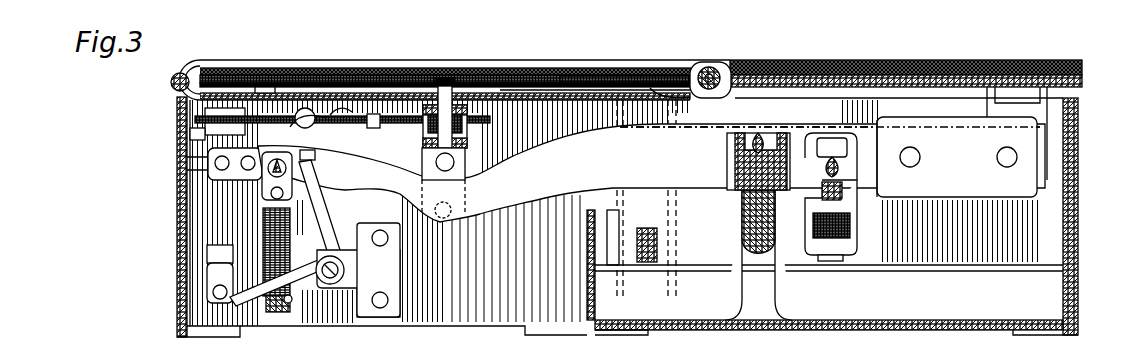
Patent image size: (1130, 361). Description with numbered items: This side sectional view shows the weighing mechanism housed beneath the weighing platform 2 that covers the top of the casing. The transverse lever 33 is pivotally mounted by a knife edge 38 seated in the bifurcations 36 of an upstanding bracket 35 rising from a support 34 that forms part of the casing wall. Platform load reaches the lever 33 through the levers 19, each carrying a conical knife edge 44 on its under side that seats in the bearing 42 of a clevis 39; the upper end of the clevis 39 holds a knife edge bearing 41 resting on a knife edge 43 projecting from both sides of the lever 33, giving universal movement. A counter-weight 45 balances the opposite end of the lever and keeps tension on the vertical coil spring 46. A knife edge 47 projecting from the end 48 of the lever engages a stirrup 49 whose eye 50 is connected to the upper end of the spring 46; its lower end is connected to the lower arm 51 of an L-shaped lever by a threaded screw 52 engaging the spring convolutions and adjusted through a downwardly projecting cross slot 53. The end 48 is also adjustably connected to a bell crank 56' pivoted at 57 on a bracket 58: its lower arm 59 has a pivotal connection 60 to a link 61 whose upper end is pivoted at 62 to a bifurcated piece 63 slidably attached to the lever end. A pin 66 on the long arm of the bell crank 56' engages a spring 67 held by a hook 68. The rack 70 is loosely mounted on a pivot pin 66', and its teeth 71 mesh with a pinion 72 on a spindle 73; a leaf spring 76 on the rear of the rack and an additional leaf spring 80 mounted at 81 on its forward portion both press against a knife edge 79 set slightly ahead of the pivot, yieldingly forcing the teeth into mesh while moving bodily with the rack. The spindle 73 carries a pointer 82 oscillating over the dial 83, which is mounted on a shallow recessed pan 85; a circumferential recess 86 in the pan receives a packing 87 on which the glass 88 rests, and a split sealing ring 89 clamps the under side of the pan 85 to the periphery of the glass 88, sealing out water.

The weighing platform 2 is at (985, 62).
The split circumferential sealing ring 89 is at (185, 66).
The leaf spring 76 is at (220, 117).
The bifurcated piece 63 is at (233, 83).
The pointer 82 is at (410, 83).
The spring 67 is at (264, 92).
The scale dial 83 is at (530, 93).
The shallow recessed scale pan 85 is at (608, 88).
The glass 88 is at (660, 88).
The packing 87 is at (722, 68).
The circumferential recess 86 is at (708, 66).
The mounting of additional leaf spring 81 is at (382, 120).
The pin 66 is at (330, 82).
The additional leaf spring 80 is at (325, 125).
The rack 70 is at (342, 104).
The hook 68 is at (200, 142).
The pivotal connection 62 is at (207, 162).
The knife edge 47 is at (213, 170).
The transverse lever 33 is at (530, 192).
The teeth 71 is at (468, 133).
The pinion 72 is at (468, 118).
The spindle 73 is at (449, 80).
The end of transverse lever 48 is at (345, 152).
The eye 50 is at (318, 182).
The knife edge 79 is at (277, 158).
The pivot pin 66' is at (313, 99).
The bell crank 56' is at (351, 208).
The stirrup 49 is at (272, 193).
The coil spring 46 is at (265, 240).
The cross slot 53 is at (272, 312).
The threaded screw 52 is at (292, 298).
The link 61 is at (220, 250).
The pivotal connection 60 is at (217, 292).
The lower arm of L-shaped lever 51 is at (260, 310).
The bracket 58 is at (383, 270).
The pivot 57 is at (337, 280).
The lower arm of bell crank 59 is at (207, 332).
The support 34 is at (810, 330).
The upstanding bracket 35 is at (752, 292).
The bifurcations 36 is at (775, 140).
The knife edge 38 is at (758, 133).
The knife edge bearing 41 is at (832, 140).
The knife edge 43 is at (838, 170).
The lever 19 is at (845, 190).
The conical knife edge 44 is at (858, 212).
The bearing 42 is at (833, 240).
The counter-weight 45 is at (1027, 147).
The clevis 39 is at (872, 160).